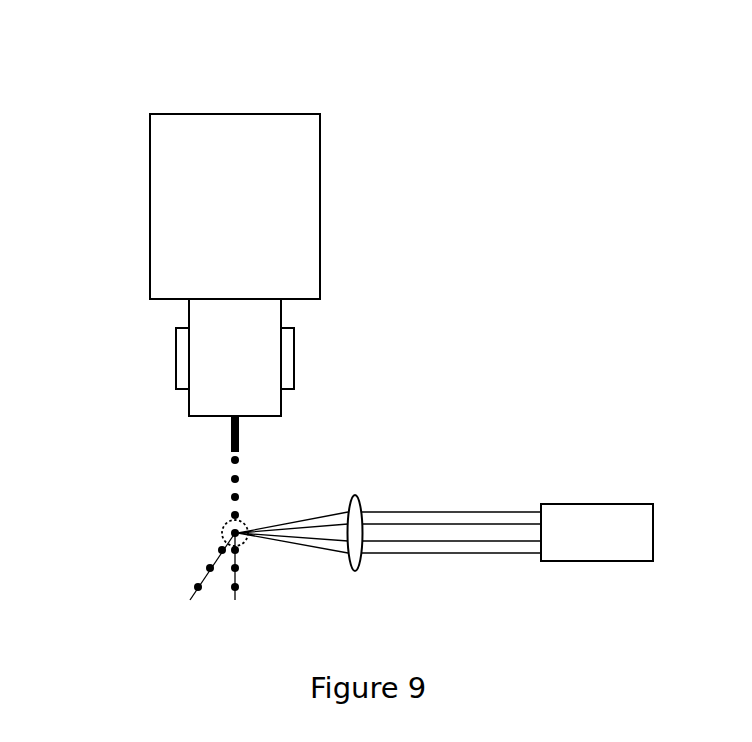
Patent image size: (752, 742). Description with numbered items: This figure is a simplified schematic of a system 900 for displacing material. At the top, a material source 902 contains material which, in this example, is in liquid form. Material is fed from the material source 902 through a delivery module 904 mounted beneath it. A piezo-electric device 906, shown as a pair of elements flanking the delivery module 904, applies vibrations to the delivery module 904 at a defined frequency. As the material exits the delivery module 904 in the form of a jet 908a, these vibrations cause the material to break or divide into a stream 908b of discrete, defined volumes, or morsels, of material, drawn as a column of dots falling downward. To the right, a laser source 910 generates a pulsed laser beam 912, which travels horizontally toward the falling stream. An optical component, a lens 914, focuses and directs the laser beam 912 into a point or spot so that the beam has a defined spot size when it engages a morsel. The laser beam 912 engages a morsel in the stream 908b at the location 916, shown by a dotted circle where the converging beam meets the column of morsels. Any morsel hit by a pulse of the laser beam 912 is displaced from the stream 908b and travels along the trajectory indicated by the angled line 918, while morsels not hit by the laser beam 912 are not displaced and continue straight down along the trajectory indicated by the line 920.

The system for displacing material 900 is at (138, 77).
The material source 902 is at (321, 141).
The delivery module 904 is at (282, 315).
The piezo-electric device 906 is at (176, 360).
The jet 908a is at (231, 445).
The stream 908b is at (231, 497).
The laser source 910 is at (654, 523).
The pulsed laser beam 912 is at (500, 508).
The lens 914 is at (356, 495).
The location 916 is at (222, 535).
The line 918 is at (190, 600).
The line 920 is at (236, 596).